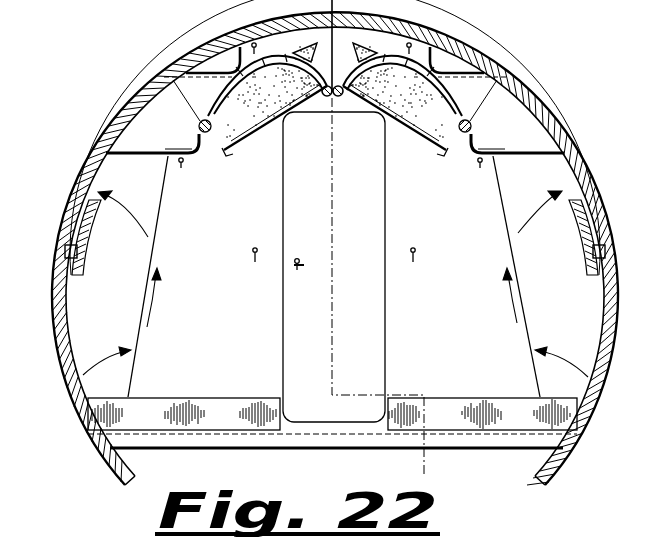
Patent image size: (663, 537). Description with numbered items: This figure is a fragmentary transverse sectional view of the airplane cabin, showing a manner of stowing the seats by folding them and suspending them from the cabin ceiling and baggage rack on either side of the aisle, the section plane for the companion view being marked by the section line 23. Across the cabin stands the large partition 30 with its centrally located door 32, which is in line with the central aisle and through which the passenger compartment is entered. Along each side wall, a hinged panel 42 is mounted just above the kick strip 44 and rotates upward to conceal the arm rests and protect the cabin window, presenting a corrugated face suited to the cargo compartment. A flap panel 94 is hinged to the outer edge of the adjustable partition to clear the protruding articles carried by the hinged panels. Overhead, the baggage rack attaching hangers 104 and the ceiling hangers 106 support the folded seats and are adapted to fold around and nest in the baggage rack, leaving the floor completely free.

The section line 23- 23 is at (337, 15).
The partition 30 is at (445, 335).
The door 32 is at (334, 267).
The hinged panel 42 is at (82, 244).
The kick strip 44 is at (133, 377).
The flap panel 94 is at (329, 276).
The baggage rack attaching hanger 104 is at (217, 153).
The ceiling hanger 106 is at (328, 101).